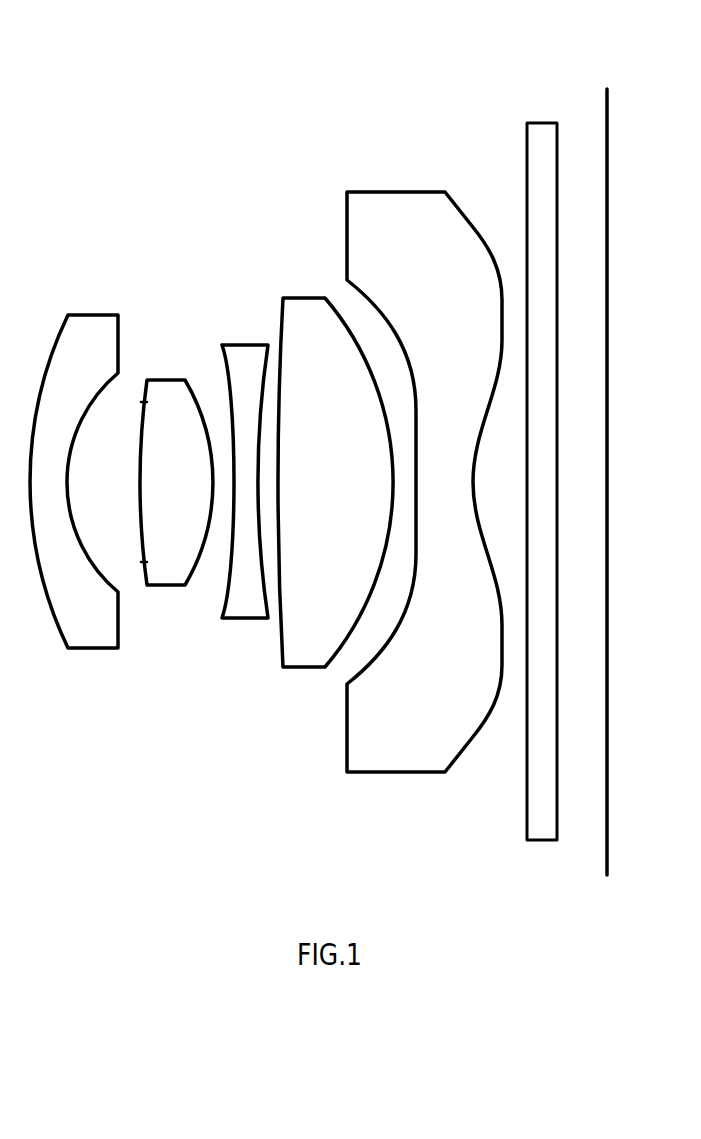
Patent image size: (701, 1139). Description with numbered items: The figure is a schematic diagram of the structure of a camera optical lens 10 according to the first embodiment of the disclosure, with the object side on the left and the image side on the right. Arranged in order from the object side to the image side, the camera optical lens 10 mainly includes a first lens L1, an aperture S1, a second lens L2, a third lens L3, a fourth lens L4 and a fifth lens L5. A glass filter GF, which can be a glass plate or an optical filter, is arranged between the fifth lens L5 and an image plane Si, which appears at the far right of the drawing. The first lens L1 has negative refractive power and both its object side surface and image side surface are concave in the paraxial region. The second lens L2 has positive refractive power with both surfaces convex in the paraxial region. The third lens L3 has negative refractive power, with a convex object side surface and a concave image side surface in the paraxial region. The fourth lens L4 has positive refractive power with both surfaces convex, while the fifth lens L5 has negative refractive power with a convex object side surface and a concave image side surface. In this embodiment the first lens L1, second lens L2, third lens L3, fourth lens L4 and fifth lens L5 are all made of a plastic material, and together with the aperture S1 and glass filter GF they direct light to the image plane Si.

The camera optical lens 10 is at (345, 33).
The first lens L1 is at (74, 468).
The aperture S1 is at (135, 459).
The second lens L2 is at (176, 465).
The third lens L3 is at (245, 467).
The fourth lens L4 is at (335, 467).
The fifth lens L5 is at (424, 466).
The glass filter GF is at (542, 467).
The image plane Si is at (601, 468).